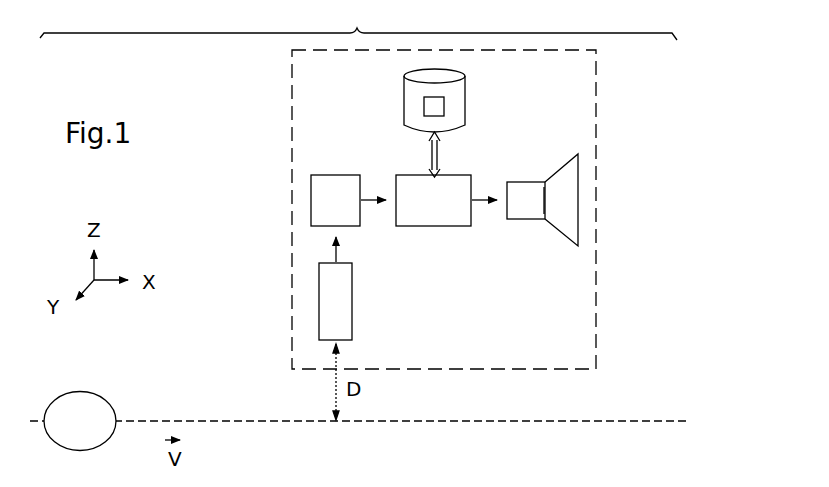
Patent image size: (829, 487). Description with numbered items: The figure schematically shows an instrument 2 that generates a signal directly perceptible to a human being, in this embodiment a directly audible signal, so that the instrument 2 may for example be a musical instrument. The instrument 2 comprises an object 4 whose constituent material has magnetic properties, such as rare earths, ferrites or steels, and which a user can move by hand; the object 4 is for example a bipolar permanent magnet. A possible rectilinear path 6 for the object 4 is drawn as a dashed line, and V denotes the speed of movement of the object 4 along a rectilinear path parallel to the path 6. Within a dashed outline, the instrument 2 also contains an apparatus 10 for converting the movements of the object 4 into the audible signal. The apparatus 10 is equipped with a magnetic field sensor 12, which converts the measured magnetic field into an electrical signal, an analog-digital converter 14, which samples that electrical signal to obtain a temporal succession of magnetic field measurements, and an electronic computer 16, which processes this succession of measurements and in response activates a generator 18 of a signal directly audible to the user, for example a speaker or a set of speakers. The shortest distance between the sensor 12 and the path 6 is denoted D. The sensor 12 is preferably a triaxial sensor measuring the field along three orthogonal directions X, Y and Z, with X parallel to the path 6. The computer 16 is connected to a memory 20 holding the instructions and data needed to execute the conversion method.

The instrument 2 is at (358, 20).
The object 4 is at (84, 397).
The rectilinear path 6 is at (655, 420).
The apparatus 10 is at (282, 128).
The magnetic field sensor 12 is at (345, 318).
The analog-digital converter 14 is at (324, 180).
The electronic computer 16 is at (430, 222).
The generator 18 is at (530, 185).
The memory 20 is at (405, 88).